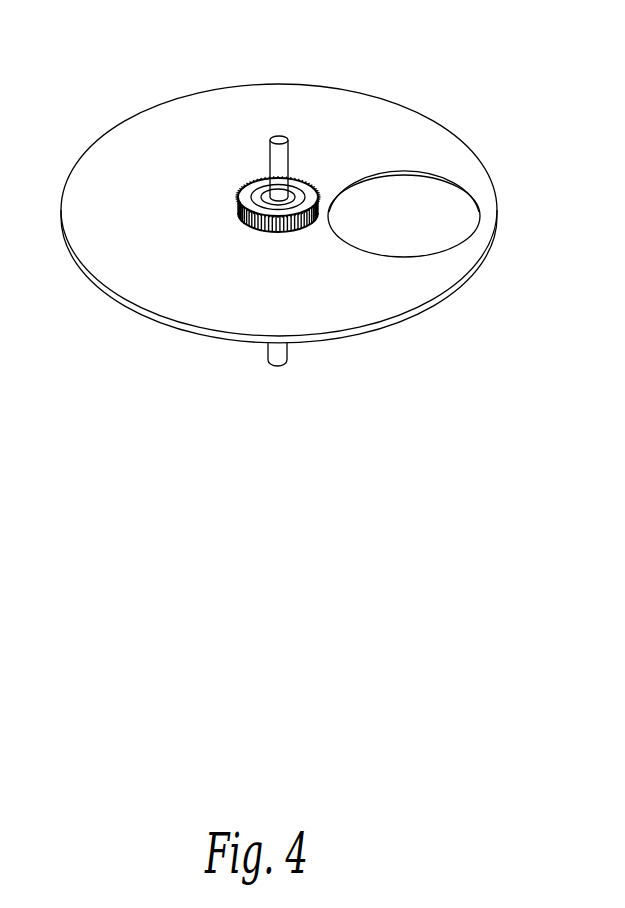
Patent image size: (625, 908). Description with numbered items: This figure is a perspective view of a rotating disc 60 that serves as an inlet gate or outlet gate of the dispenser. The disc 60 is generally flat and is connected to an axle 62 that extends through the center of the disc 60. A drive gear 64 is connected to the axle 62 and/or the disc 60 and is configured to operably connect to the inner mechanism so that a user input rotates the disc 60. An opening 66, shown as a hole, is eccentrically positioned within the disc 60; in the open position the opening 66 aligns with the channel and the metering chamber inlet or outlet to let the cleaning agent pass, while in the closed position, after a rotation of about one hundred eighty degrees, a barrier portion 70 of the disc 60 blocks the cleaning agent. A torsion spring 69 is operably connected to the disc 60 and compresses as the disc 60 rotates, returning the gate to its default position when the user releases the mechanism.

The rotating disc 60 is at (197, 62).
The barrier portion 70 is at (104, 192).
The opening 66 is at (440, 210).
The drive gear 64 is at (238, 205).
The torsion spring 69 is at (251, 200).
The axle 62 is at (286, 156).